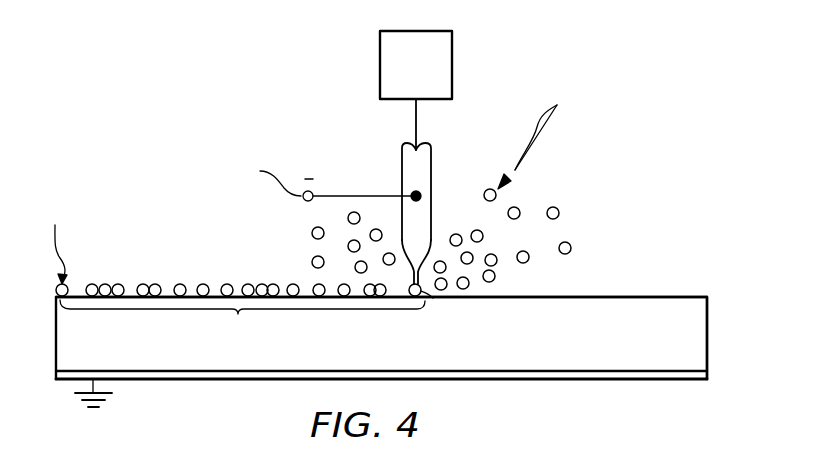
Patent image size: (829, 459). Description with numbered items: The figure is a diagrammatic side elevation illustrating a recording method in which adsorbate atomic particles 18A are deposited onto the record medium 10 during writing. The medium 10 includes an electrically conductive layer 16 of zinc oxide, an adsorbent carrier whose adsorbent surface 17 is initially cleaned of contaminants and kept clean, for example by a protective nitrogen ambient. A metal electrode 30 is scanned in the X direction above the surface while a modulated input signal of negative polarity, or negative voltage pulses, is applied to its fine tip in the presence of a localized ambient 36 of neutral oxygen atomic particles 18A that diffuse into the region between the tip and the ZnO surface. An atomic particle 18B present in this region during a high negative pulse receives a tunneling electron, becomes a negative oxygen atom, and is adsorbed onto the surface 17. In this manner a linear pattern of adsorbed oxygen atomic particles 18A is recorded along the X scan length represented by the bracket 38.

The medium 10 is at (648, 290).
The electrically conductive layer of adsorbent carrier 16 is at (707, 335).
The adsorbent surface 17 is at (590, 297).
The electrode 30 is at (432, 168).
The localized ambient 36 is at (562, 231).
The bracket 38 is at (242, 319).
The adsorbate atomic particles 18A is at (225, 284).
The atomic particle 18B is at (417, 315).